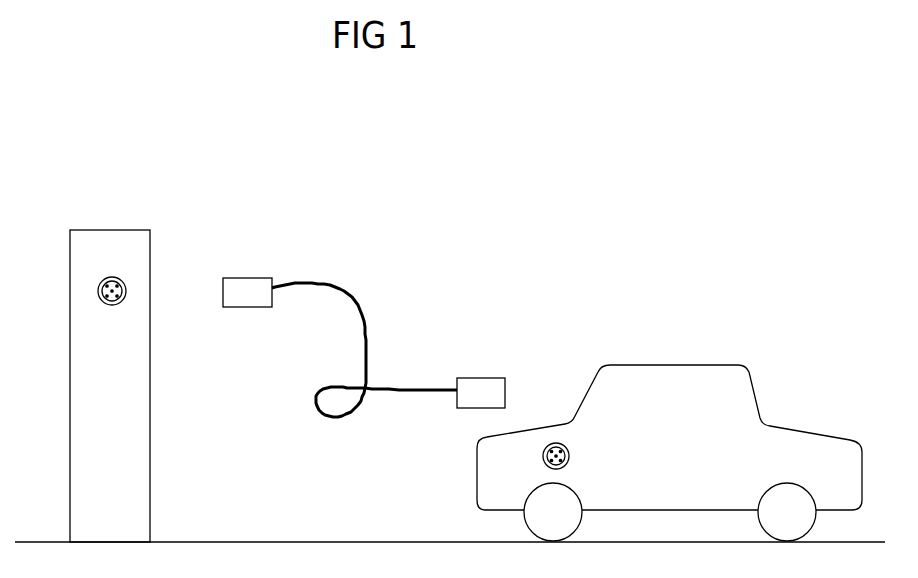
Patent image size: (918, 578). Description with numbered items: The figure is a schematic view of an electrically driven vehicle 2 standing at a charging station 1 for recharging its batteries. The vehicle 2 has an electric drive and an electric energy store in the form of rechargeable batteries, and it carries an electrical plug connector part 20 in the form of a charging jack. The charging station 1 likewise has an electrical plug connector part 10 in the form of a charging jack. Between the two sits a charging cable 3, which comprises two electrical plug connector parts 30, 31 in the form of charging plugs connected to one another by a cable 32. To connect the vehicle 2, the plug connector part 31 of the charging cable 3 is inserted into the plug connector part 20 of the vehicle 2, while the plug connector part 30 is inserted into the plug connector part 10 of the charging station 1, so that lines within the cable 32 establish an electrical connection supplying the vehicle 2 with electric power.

The charging station 1 is at (136, 205).
The electrical plug connector part 10 is at (100, 303).
The vehicle 2 is at (692, 350).
The electrical plug connector part 20 is at (543, 462).
The charging cable 3 is at (349, 282).
The electrical plug connector part 30 is at (237, 296).
The electrical plug connector part 31 is at (483, 385).
The cable 32 is at (352, 303).